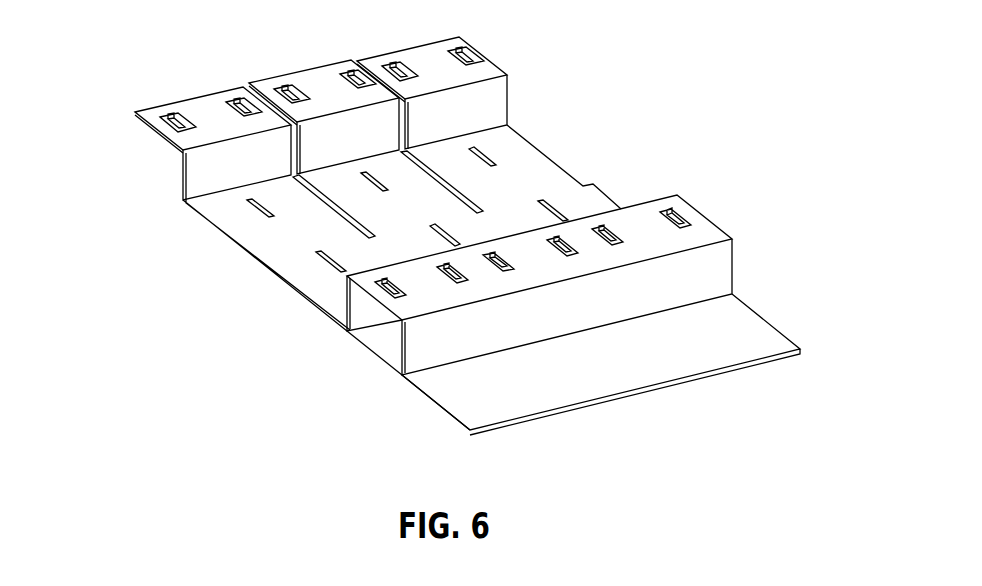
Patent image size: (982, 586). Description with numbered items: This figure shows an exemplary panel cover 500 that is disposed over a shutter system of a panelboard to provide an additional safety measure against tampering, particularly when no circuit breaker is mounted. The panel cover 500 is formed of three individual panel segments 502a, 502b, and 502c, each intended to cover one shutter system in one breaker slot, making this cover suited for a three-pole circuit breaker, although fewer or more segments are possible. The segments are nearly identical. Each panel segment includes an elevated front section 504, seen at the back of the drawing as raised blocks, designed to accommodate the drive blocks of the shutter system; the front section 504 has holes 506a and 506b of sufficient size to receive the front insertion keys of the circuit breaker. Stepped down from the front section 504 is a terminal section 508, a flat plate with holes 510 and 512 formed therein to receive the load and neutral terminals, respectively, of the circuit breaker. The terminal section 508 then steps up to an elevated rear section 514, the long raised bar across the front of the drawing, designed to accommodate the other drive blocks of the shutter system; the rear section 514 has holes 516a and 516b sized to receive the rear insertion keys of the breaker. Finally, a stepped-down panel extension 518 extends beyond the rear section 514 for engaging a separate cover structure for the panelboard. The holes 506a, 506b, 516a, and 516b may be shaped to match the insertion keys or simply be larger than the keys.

The panel cover 500 is at (589, 93).
The panel segment 502a is at (211, 180).
The panel segment 502b is at (443, 225).
The panel segment 502c is at (553, 200).
The elevated front section 504 is at (184, 114).
The hole 506a is at (152, 127).
The hole 506b is at (235, 100).
The terminal section 508 is at (263, 247).
The hole 510 is at (257, 210).
The hole 512 is at (327, 267).
The elevated rear section 514 is at (493, 286).
The hole 516a is at (447, 270).
The hole 516b is at (383, 283).
The stepped-down panel extension 518 is at (747, 327).